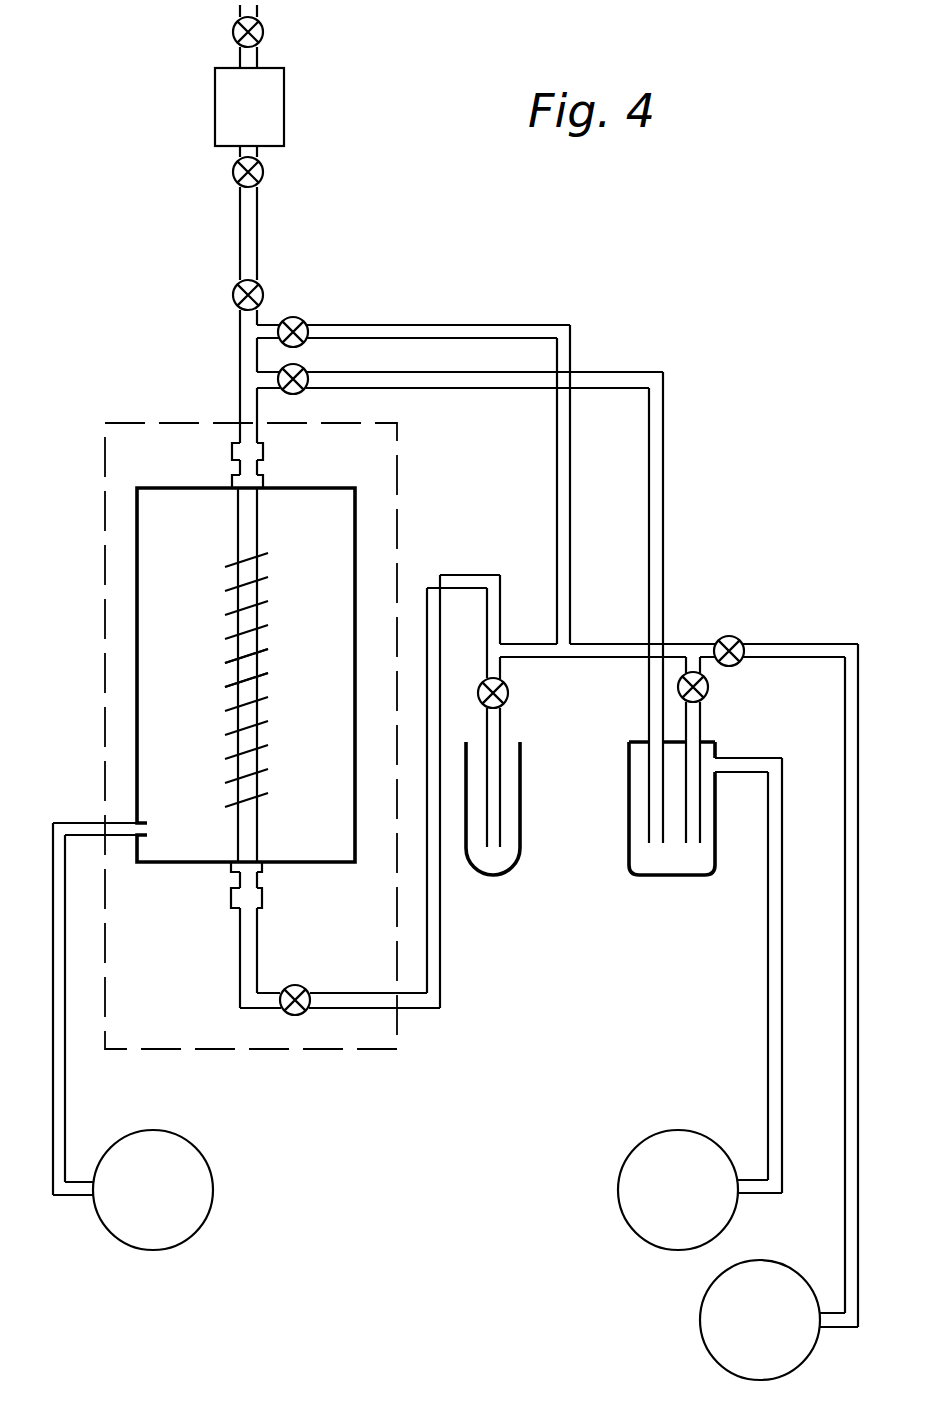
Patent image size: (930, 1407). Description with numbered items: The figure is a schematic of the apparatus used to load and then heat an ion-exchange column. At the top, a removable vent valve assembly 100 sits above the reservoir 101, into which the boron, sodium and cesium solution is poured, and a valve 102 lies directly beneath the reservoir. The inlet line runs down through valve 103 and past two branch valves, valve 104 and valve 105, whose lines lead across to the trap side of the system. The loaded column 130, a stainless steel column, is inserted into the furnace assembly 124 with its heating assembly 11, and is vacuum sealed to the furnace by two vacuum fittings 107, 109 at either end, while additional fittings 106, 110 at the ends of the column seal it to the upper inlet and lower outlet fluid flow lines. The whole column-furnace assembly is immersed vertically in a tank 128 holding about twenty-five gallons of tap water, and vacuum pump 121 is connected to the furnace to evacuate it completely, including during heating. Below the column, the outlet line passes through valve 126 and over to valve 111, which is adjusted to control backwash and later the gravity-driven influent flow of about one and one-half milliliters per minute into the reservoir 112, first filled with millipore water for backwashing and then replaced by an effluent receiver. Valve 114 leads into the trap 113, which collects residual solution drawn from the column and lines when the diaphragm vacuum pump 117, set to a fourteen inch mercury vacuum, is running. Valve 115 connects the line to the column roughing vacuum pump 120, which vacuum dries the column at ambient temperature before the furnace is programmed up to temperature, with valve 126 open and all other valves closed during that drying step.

The vent valve assembly 100 is at (263, 29).
The reservoir 101 is at (262, 116).
The valve 102 is at (260, 181).
The valve 103 is at (236, 286).
The valve 104 is at (303, 320).
The valve 105 is at (303, 390).
The fitting 106 is at (264, 452).
The vacuum fitting 107 is at (264, 481).
The vacuum fitting 109 is at (263, 870).
The fitting 110 is at (263, 898).
The heating assembly 11 is at (268, 601).
The loaded column 130 is at (253, 665).
The furnace assembly 124 is at (137, 523).
The tank 128 is at (397, 493).
The valve 126 is at (308, 990).
The valve 111 is at (508, 697).
The reservoir 112 is at (503, 868).
The trap 113 is at (672, 868).
The valve 114 is at (708, 691).
The valve 115 is at (731, 638).
The diaphragm vacuum pump 117 is at (619, 1172).
The column roughing vacuum pump 120 is at (701, 1300).
The vacuum pump 121 is at (260, 1142).